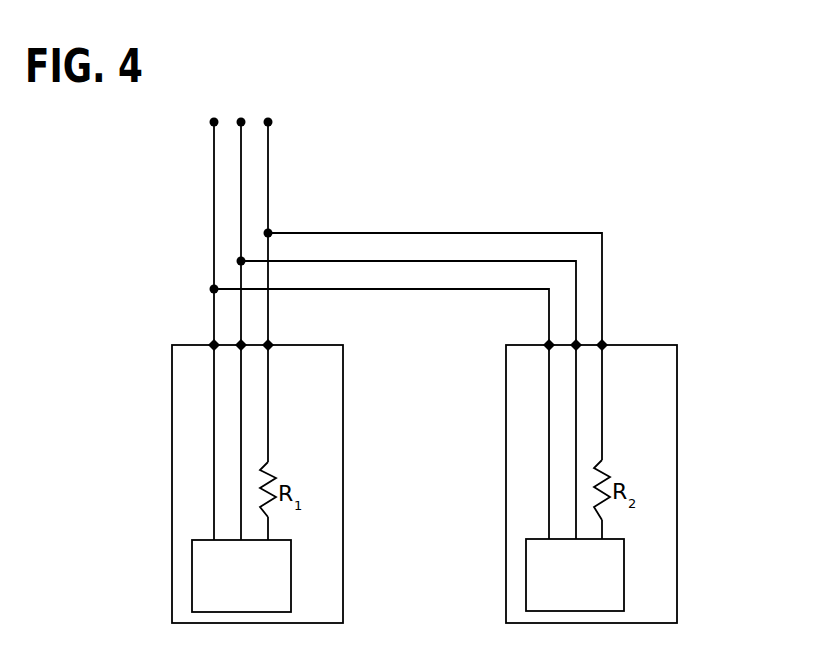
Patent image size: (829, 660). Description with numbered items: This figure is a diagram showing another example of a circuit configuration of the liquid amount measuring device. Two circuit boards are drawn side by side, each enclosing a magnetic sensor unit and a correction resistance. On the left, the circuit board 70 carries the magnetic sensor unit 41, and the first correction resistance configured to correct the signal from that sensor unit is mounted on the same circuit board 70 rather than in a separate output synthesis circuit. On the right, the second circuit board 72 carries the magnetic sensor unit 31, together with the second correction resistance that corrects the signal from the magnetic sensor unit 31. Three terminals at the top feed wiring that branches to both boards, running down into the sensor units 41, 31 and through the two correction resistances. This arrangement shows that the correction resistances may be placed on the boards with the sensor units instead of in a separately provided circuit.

The circuit board 70 is at (343, 455).
The magnetic sensor unit 41 is at (291, 557).
The second circuit unit 72 is at (677, 453).
The magnetic sensor unit 31 is at (624, 556).